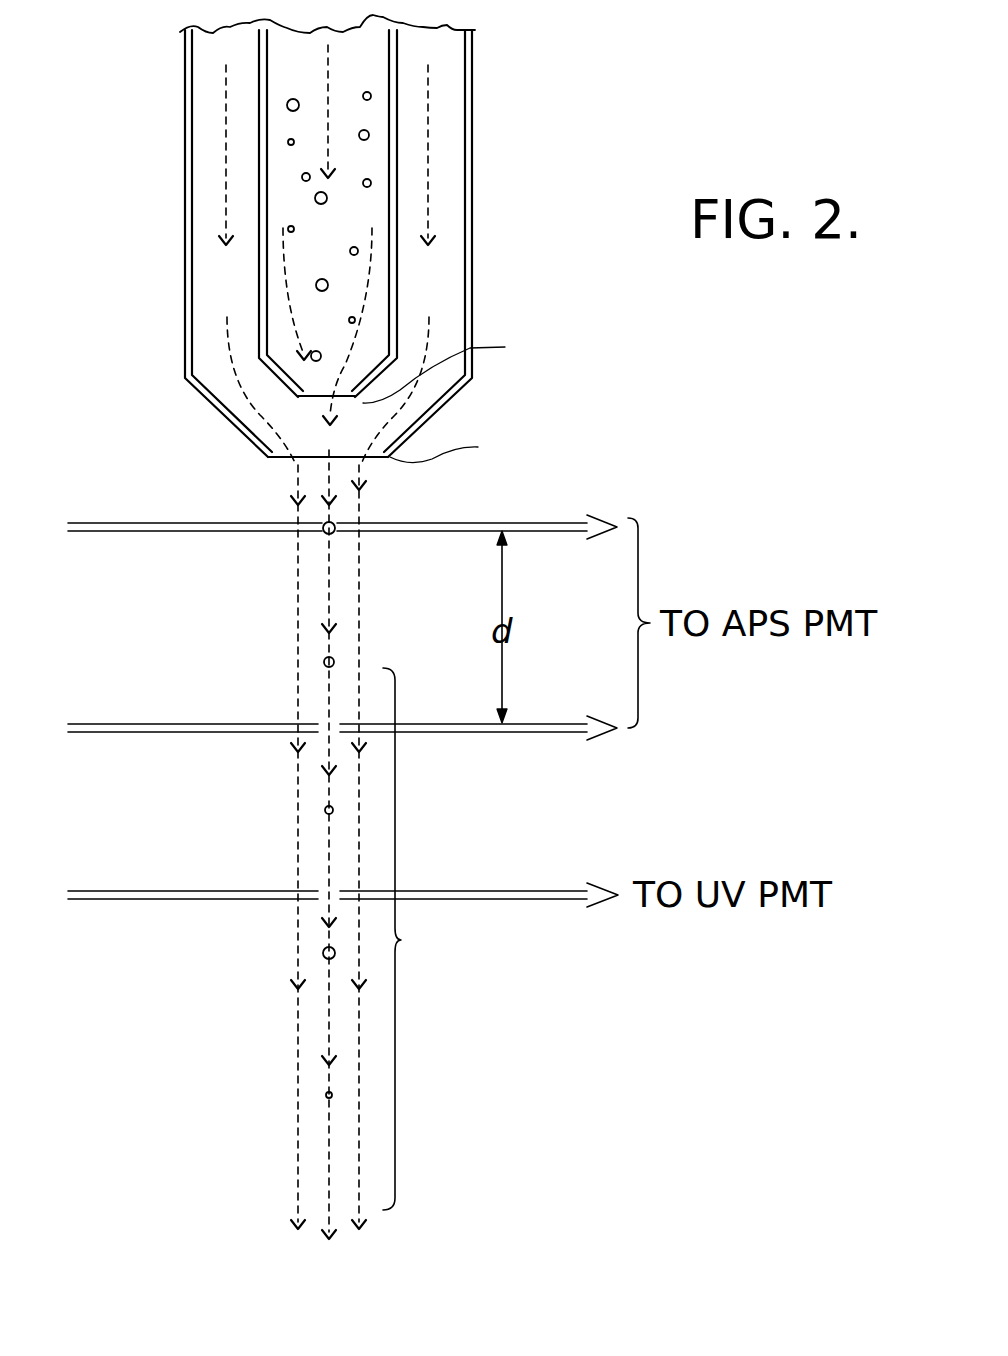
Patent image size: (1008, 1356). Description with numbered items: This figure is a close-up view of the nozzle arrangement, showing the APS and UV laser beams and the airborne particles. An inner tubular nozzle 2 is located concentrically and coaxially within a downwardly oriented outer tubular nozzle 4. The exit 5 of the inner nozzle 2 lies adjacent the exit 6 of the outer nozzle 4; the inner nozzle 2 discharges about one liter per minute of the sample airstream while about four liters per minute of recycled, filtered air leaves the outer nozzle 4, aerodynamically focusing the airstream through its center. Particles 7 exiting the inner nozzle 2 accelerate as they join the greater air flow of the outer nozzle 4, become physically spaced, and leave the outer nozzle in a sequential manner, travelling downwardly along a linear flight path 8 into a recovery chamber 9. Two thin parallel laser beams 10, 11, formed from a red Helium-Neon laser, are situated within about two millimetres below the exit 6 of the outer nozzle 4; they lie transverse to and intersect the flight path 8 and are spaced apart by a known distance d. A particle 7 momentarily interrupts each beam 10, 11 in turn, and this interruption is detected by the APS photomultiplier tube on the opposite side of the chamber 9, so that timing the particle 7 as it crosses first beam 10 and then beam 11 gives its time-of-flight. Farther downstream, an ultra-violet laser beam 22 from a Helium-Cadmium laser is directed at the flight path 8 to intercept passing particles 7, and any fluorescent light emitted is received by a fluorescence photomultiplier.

The inner tubular nozzle 2 is at (260, 183).
The outer tubular nozzle 4 is at (187, 318).
The exit of the inner nozzle 5 is at (446, 364).
The exit of the outer nozzle 6 is at (446, 449).
The particles 7 is at (371, 96).
The linear flight path 8 is at (411, 939).
The recovery chamber 9 is at (590, 1081).
The first laser beam 10 is at (126, 523).
The second laser beam 11 is at (108, 726).
The ultra-violet laser beam 22 is at (130, 900).